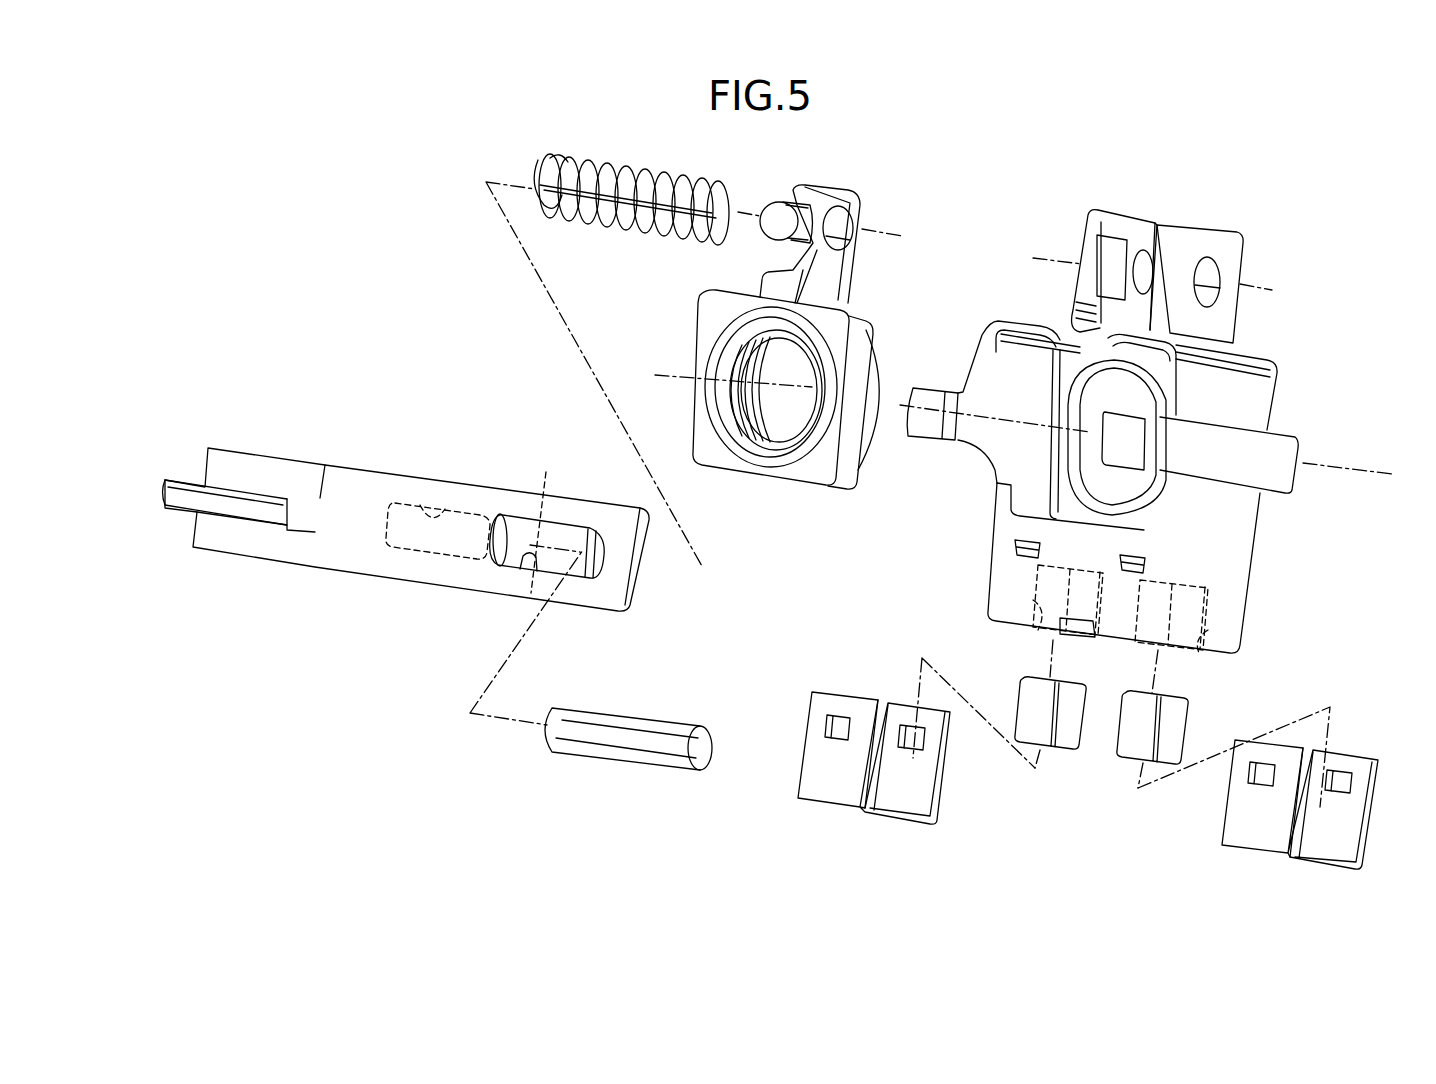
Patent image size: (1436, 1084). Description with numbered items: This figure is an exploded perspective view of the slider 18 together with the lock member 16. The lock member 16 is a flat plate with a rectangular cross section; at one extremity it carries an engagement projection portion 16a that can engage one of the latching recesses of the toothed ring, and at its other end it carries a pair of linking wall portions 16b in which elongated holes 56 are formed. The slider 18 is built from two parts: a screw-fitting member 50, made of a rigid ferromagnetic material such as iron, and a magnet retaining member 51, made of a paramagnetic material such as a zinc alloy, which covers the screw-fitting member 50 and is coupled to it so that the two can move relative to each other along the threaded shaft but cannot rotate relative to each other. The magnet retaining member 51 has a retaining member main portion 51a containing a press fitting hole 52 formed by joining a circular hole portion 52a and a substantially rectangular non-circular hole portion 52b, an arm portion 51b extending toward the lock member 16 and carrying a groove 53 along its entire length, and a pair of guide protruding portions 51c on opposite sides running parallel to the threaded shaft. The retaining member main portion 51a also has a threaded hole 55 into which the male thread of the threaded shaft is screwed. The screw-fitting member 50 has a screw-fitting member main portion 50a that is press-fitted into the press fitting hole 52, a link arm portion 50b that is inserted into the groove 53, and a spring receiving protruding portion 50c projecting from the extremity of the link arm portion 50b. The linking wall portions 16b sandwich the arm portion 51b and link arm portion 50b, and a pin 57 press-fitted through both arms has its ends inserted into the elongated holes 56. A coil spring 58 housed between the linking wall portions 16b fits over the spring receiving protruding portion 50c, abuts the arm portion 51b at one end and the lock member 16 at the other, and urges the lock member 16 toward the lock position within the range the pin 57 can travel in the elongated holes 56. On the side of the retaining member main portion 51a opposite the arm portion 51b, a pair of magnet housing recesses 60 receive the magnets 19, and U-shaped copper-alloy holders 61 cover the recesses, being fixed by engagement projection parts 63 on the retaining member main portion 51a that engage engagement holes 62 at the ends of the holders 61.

The lock member 16 is at (353, 488).
The engagement projection portion 16a is at (183, 502).
The linking wall portions 16b is at (540, 532).
The slider 18 is at (892, 597).
The magnets 19 is at (1063, 742).
The screw-fitting member 50 is at (807, 364).
The screw-fitting member main portion 50a is at (830, 330).
The link arm portion 50b is at (836, 203).
The spring receiving protruding portion 50c is at (770, 213).
The magnet retaining member 51 is at (1104, 423).
The retaining member main portion 51a is at (1237, 568).
The arm portion 51b is at (1233, 250).
The guide protruding portions 51c is at (934, 404).
The press fitting hole 52 is at (1025, 229).
The circular hole portion 52a is at (1053, 400).
The non-circular hole portion 52b is at (1090, 400).
The groove 53 is at (1140, 233).
The threaded hole 55 is at (748, 433).
The elongated holes 56 is at (427, 520).
The pin 57 is at (612, 745).
The coil spring 58 is at (633, 232).
The magnet housing recesses 60 is at (1038, 630).
The holders 61 is at (823, 795).
The engagement holes 62 is at (827, 725).
The engagement projection parts 63 is at (1027, 540).